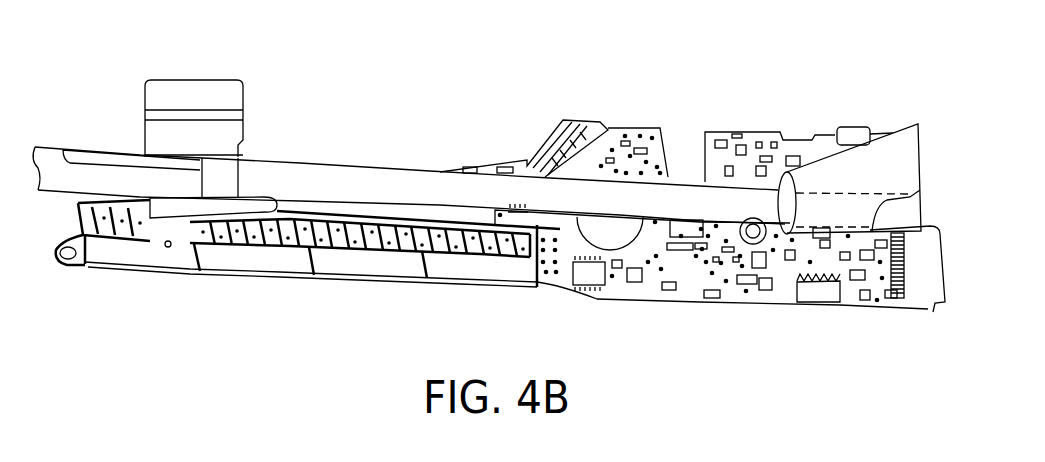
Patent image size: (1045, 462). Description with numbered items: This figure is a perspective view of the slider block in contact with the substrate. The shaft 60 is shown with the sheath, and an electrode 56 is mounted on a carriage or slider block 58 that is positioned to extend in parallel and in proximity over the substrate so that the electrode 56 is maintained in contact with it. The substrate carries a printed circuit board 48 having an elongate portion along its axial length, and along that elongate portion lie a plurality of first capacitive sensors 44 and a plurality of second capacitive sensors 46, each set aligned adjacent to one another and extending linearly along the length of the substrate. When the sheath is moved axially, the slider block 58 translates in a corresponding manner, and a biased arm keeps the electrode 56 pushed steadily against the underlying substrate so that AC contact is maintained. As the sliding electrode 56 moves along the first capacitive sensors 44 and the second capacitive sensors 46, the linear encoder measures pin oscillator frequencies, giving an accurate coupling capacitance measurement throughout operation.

The first capacitive sensors 44 is at (352, 262).
The second capacitive sensors 46 is at (467, 256).
The printed circuit board 48 is at (693, 263).
The electrode 56 is at (169, 247).
The slider block 58 is at (190, 92).
The shaft 60 is at (430, 178).